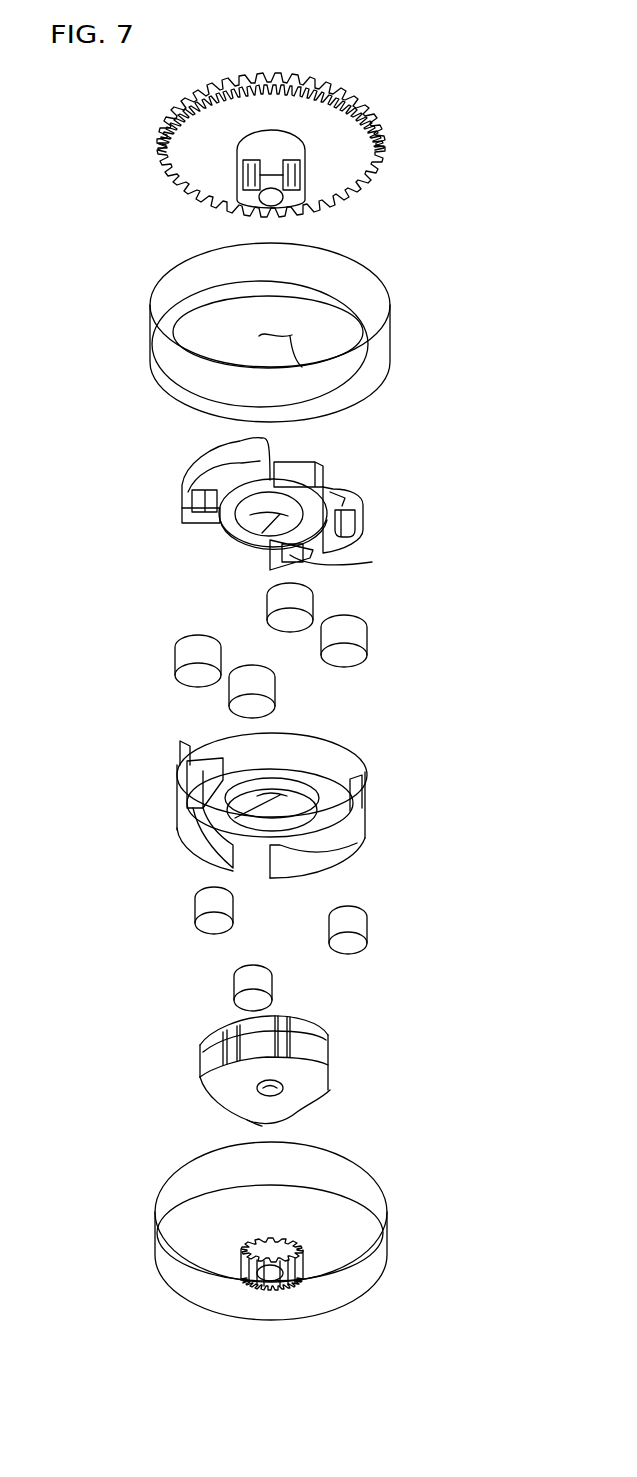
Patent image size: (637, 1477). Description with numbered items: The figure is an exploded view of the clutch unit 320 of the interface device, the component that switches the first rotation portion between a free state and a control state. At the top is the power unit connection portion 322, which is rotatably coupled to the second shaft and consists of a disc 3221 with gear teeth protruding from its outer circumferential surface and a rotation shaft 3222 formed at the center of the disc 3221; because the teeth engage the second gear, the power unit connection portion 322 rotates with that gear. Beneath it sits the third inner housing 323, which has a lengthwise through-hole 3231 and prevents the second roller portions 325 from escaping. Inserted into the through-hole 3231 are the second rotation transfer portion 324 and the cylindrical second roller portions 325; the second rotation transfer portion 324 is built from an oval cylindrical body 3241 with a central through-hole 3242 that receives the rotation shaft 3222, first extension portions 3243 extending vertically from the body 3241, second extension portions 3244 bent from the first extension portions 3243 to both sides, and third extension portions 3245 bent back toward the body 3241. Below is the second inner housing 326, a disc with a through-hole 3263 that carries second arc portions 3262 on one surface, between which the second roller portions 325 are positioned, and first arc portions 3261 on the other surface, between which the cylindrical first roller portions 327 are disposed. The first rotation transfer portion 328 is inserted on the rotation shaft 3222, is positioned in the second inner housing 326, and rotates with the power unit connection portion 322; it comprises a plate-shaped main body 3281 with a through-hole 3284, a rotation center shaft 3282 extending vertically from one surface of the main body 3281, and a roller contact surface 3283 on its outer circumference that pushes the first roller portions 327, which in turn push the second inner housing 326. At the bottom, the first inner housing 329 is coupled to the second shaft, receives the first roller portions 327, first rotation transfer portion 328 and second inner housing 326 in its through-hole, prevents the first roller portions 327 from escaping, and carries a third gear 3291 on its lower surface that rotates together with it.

The clutch unit 320 is at (428, 1318).
The power unit connection portion 322 is at (374, 199).
The disc 3221 is at (193, 149).
The rotation shaft 3222 is at (303, 152).
The third inner housing 323 is at (377, 308).
The through-hole 3231 is at (300, 367).
The second rotation transfer portion 324 is at (371, 548).
The body 3241 is at (322, 489).
The through-hole 3242 is at (237, 550).
The first extension portions 3243 is at (323, 540).
The second extension portions 3244 is at (363, 530).
The third extension portions 3245 is at (343, 500).
The second roller portions 325 is at (353, 633).
The second inner housing 326 is at (386, 815).
The first arc portions 3261 is at (337, 857).
The second arc portions 3262 is at (183, 768).
The through-hole 3263 is at (203, 807).
The first roller portions 327 is at (353, 923).
The first rotation transfer portion 328 is at (350, 1075).
The main body 3281 is at (217, 1088).
The rotation center shaft 3282 is at (235, 1027).
The roller contact surface 3283 is at (247, 1120).
The through-hole 3284 is at (283, 1092).
The first inner housing 329 is at (377, 1215).
The third gear 3291 is at (300, 1282).